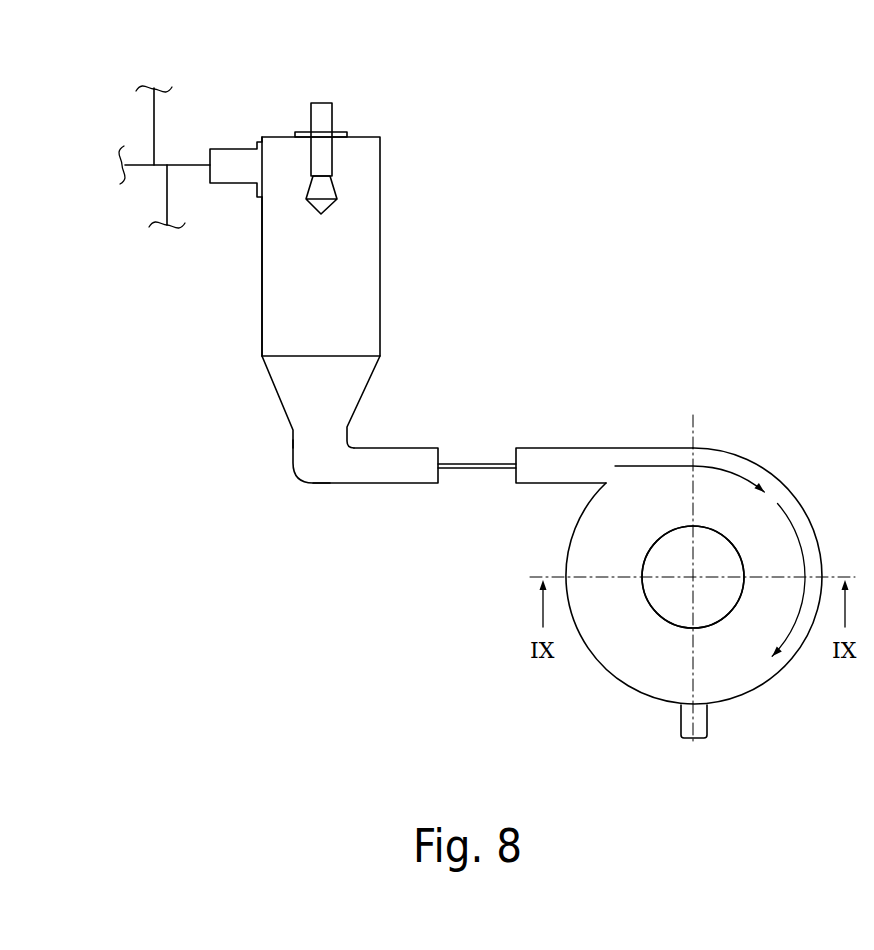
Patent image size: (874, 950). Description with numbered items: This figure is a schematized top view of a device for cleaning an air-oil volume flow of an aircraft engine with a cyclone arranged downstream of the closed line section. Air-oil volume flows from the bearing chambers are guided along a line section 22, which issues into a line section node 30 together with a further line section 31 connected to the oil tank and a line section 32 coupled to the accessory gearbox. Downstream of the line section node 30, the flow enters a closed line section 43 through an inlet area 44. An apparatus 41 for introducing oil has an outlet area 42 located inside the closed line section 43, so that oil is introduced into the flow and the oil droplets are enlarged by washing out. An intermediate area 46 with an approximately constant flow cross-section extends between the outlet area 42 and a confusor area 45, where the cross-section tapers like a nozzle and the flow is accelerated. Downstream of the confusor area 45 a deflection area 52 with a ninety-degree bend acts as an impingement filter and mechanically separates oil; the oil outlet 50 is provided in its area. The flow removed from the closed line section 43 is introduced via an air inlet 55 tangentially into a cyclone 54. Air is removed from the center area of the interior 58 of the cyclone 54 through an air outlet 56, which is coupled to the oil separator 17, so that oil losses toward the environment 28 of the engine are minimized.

The line section 22 is at (157, 113).
The line section node 30 is at (157, 162).
The further line section 31 is at (144, 168).
The line section 32 is at (172, 195).
The apparatus for introducing oil 41 is at (355, 120).
The outlet area 42 is at (323, 213).
The closed line section 43 is at (255, 247).
The inlet area 44 is at (237, 147).
The confusor area 45 is at (276, 392).
The intermediate area 46 is at (260, 283).
The oil outlet 50 is at (367, 496).
The deflection area 52 is at (296, 496).
The cyclone 54 is at (752, 425).
The air inlet 55 is at (552, 447).
The air outlet 56 is at (680, 720).
The interior 58 is at (700, 561).
The environment 28 is at (693, 742).
The oil separator 17 is at (693, 577).